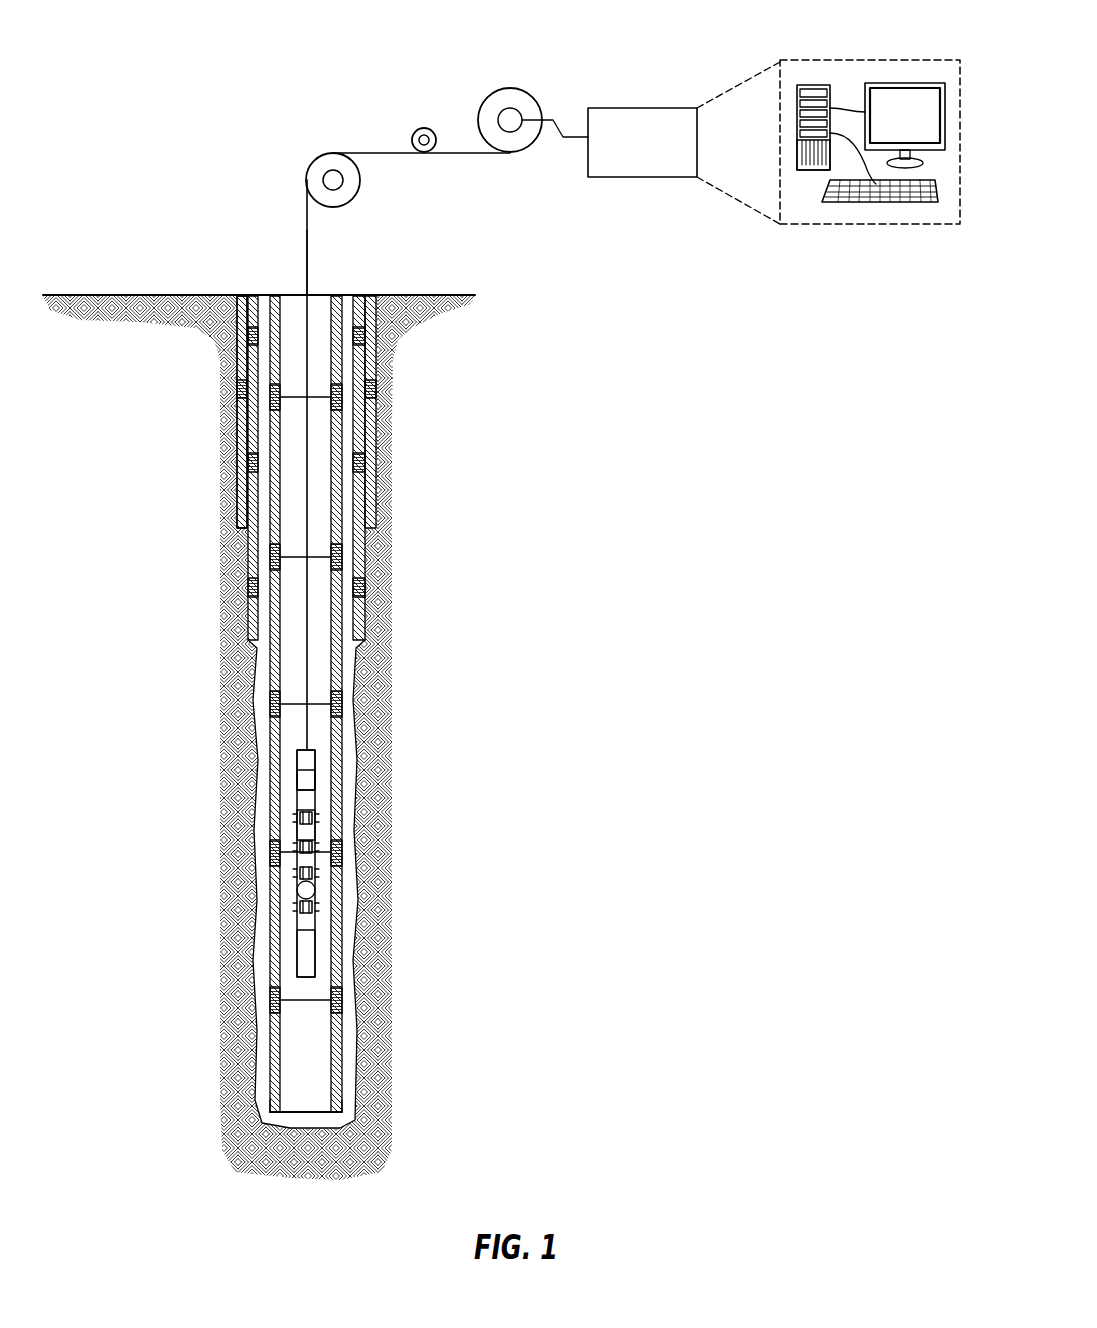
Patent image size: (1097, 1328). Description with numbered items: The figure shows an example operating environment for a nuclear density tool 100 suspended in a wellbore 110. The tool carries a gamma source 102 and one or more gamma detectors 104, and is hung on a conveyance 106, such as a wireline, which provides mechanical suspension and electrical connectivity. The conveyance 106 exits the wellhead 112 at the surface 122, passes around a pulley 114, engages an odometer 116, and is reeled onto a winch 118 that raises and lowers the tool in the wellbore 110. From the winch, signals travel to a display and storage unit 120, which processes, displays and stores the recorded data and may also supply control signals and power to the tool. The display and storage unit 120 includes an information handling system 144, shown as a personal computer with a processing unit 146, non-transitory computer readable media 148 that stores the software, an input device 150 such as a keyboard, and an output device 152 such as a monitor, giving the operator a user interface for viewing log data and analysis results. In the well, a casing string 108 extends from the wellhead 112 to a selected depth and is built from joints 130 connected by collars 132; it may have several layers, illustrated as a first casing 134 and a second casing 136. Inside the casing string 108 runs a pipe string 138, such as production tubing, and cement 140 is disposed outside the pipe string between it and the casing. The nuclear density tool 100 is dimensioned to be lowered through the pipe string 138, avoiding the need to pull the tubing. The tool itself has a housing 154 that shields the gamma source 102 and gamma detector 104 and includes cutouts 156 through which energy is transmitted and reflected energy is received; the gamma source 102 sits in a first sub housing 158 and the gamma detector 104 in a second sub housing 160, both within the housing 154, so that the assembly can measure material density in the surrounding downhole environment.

The nuclear density tool 100 is at (283, 892).
The gamma source 102 is at (312, 912).
The gamma detector 104 is at (318, 818).
The conveyance 106 is at (309, 252).
The casing string 108 is at (226, 516).
The wellbore 110 is at (357, 645).
The wellhead 112 is at (294, 287).
The pulley 114 is at (310, 165).
The odometer 116 is at (424, 128).
The winch 118 is at (528, 94).
The display and storage unit 120 is at (652, 108).
The surface 122 is at (83, 295).
The joint 130 is at (252, 550).
The collar 132 is at (252, 590).
The first casing 134 is at (360, 553).
The second casing 136 is at (372, 510).
The pipe string 138 is at (342, 1067).
The cement 140 is at (355, 760).
The information handling system 144 is at (852, 60).
The processing unit 146 is at (810, 178).
The non-transitory computer readable media 148 is at (813, 85).
The input device 150 is at (876, 203).
The output device 152 is at (905, 83).
The housing 154 is at (297, 765).
The cutout 156 is at (297, 825).
The first sub housing 158 is at (315, 778).
The second sub housing 160 is at (292, 945).